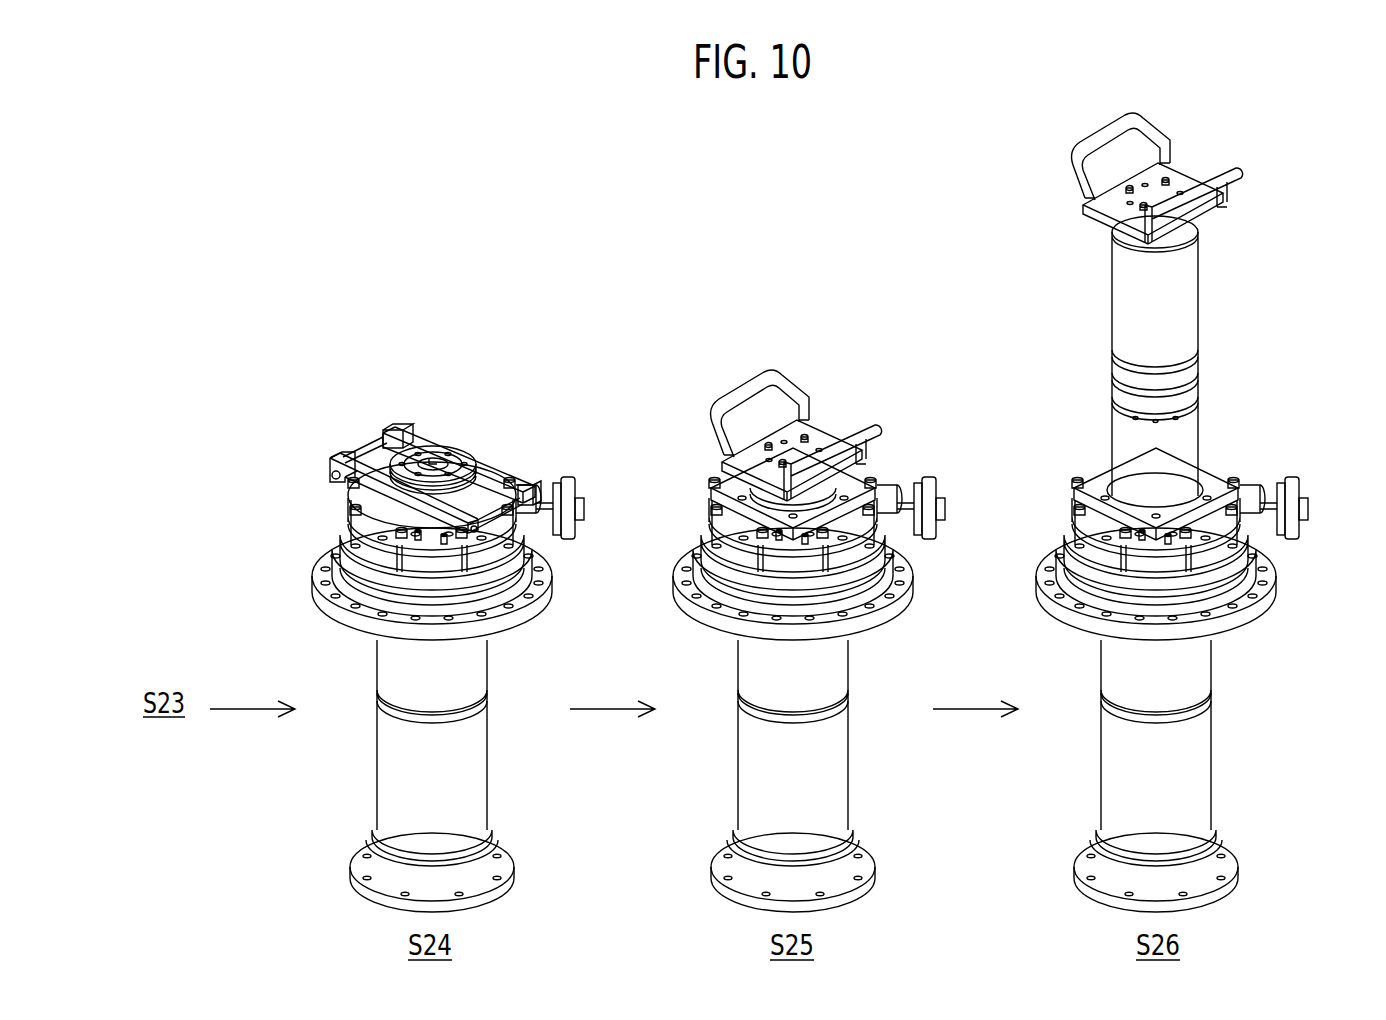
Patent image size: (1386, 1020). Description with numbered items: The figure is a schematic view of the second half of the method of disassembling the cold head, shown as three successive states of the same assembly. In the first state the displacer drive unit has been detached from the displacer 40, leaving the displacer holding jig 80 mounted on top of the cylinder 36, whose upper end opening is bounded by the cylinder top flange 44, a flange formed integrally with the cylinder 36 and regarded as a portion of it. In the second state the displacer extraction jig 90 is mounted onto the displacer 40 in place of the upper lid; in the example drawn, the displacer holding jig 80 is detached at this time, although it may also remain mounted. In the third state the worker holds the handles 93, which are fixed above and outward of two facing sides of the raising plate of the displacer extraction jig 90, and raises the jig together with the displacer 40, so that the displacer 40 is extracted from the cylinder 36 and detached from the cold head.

The cylinder 36 is at (1181, 497).
The displacer 40 is at (432, 456).
The cylinder top flange 44 is at (377, 530).
The displacer holding jig 80 is at (508, 474).
The displacer extraction jig 90 is at (829, 424).
The handle 93 is at (1213, 207).